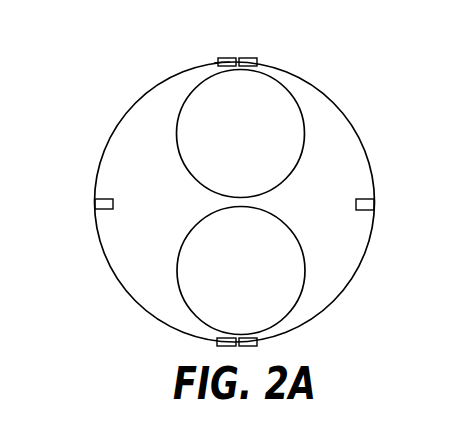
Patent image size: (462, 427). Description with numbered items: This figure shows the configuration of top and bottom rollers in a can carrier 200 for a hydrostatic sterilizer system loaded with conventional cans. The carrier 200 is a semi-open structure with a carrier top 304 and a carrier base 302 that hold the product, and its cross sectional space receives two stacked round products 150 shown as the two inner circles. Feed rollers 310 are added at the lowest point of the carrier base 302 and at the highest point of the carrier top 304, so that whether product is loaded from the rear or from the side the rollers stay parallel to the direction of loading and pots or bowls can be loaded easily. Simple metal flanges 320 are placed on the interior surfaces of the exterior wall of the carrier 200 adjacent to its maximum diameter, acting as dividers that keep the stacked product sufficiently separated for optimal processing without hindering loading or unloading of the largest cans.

The carrier 200 is at (100, 137).
The cylindrical supports 150 is at (353, 157).
The carrier top 304 is at (217, 63).
The feed rollers 310 is at (218, 59).
The carrier base 302 is at (217, 342).
The metal flanges 320 is at (378, 198).